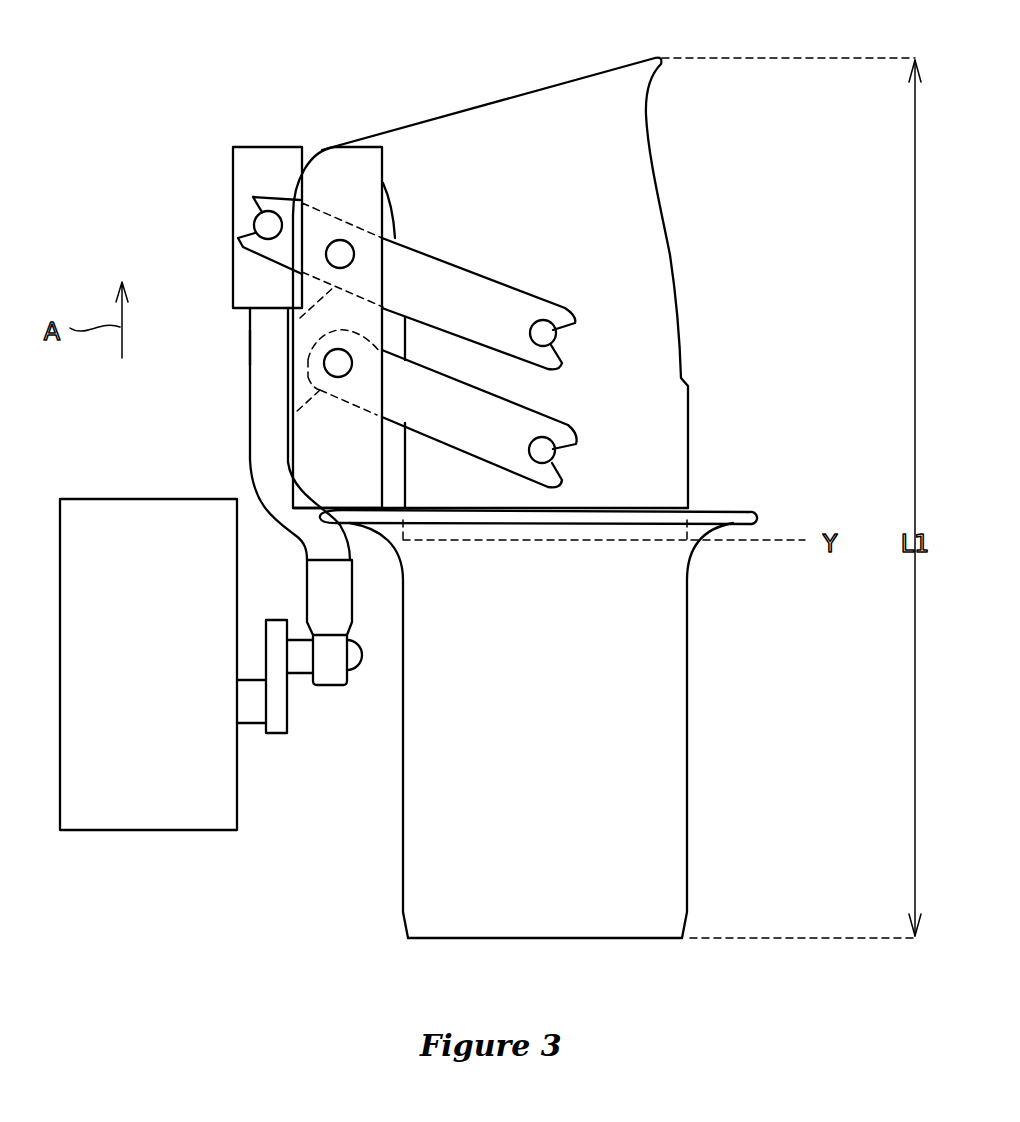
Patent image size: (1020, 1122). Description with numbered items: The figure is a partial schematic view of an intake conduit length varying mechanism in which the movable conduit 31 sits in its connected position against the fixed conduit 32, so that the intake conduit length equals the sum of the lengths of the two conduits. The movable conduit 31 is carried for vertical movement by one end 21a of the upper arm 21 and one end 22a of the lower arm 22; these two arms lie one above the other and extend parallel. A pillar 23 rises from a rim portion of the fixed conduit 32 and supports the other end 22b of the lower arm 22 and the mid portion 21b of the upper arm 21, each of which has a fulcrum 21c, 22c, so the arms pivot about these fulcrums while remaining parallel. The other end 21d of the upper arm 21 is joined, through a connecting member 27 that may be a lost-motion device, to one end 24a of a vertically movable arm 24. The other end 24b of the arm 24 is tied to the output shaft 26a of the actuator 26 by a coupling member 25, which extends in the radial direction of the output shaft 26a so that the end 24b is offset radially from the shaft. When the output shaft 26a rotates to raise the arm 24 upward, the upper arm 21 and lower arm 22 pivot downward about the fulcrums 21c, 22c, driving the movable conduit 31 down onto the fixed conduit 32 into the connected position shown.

The upper arm 21 is at (427, 268).
The one end of upper arm 21a is at (567, 317).
The mid portion of upper arm 21b is at (300, 318).
The fulcrum 21c is at (338, 254).
The other end of upper arm 21d is at (265, 203).
The lower arm 22 is at (480, 417).
The one end of lower arm 22a is at (565, 443).
The other end of lower arm 22b is at (295, 413).
The fulcrum 22c is at (338, 363).
The pillar 23 is at (355, 168).
The arm 24 is at (257, 448).
The one end of arm 24a is at (248, 347).
The other end of arm 24b is at (328, 685).
The coupling member 25 is at (278, 733).
The actuator 26 is at (110, 520).
The output shaft 26a is at (253, 720).
The connecting member 27 is at (240, 183).
The movable conduit 31 is at (640, 145).
The fixed conduit 32 is at (657, 695).